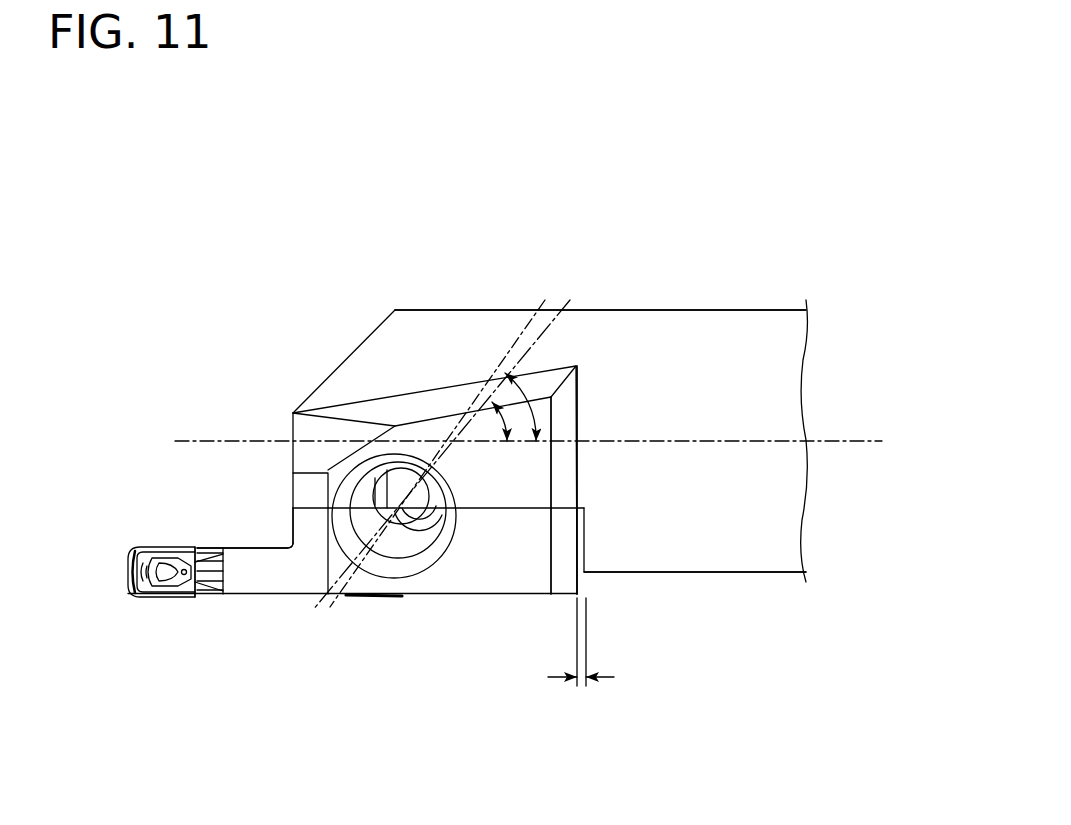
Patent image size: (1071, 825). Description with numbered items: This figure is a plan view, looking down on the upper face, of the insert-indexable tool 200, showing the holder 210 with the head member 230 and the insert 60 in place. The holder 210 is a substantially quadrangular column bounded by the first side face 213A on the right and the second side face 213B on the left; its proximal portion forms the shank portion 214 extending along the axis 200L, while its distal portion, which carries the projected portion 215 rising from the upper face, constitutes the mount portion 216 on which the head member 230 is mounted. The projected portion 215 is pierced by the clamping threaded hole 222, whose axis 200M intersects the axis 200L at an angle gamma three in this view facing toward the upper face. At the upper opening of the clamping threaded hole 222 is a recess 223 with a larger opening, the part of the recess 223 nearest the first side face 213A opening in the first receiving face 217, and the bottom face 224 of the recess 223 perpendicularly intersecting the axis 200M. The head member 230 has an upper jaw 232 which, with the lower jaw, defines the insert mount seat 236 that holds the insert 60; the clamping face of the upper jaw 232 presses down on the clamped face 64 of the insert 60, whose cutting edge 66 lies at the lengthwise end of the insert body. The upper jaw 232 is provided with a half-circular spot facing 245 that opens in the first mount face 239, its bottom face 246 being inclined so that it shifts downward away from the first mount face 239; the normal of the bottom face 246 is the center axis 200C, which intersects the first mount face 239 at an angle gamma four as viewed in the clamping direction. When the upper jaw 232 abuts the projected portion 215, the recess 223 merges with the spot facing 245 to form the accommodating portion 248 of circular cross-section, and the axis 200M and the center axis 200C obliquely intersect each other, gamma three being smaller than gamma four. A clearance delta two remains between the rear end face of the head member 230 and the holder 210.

The insert-indexable tool 200 is at (216, 208).
The holder 210 is at (702, 228).
The shank portion 214 is at (778, 268).
The mount portion 216 is at (404, 222).
The first side face 213A is at (690, 573).
The second side face 213B is at (657, 310).
The axis of the clamping threaded hole 200M is at (527, 325).
The center axis of the spot facing 200C is at (547, 331).
The axis of the holder 200L is at (862, 437).
The projected portion 215 is at (563, 460).
The first receiving face 217 is at (503, 513).
The clamping threaded hole 222 is at (403, 483).
The recess 223 is at (372, 462).
The bottom face of the recess 224 is at (360, 480).
The head member 230 is at (370, 636).
The upper jaw 232 is at (293, 570).
The insert mount seat 236 is at (192, 526).
The first mount face 239 is at (521, 503).
The spot facing 245 is at (413, 582).
The bottom face of the spot facing 246 is at (433, 542).
The accommodating portion 248 is at (334, 492).
The insert 60 is at (137, 609).
The clamped face 64 is at (215, 579).
The cutting edge 66 is at (128, 572).